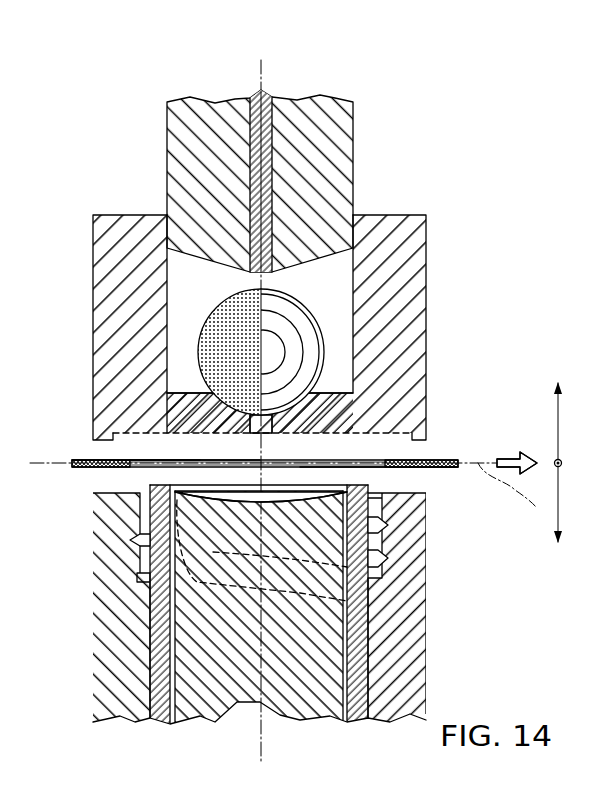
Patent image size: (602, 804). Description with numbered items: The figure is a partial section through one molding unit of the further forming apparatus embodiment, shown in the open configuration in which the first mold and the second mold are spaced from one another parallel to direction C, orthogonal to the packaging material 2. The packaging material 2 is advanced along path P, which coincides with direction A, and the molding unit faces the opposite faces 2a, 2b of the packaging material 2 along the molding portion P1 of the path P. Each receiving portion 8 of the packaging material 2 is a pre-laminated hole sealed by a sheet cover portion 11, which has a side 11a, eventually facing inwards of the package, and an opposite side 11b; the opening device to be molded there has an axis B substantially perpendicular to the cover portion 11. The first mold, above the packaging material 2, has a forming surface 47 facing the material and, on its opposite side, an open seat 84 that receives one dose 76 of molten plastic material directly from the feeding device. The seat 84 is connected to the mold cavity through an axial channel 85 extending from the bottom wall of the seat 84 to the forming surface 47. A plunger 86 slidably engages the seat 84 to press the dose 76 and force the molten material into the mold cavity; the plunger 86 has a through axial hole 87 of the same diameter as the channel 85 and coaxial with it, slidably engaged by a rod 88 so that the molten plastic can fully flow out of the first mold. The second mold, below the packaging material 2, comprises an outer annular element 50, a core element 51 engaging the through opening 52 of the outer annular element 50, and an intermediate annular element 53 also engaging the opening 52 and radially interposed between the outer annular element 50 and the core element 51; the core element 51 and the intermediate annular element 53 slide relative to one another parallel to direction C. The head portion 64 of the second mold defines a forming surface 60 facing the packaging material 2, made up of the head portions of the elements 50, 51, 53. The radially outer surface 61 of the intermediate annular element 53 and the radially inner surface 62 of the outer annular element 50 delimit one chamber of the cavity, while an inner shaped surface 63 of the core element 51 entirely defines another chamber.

The plunger 86 is at (205, 118).
The through axial hole 87 is at (257, 139).
The rod 88 is at (264, 182).
The open seat 84 is at (170, 272).
The dose 76 is at (298, 338).
The forming surface 47 is at (202, 447).
The axial channel 85 is at (253, 430).
The forming surface 60 is at (272, 495).
The receiving portion 8 is at (343, 456).
The packaging material 2 is at (442, 452).
The face of packaging material 2a is at (84, 457).
The face of packaging material 2b is at (447, 472).
The cover portion 11 is at (157, 458).
The side of cover portion 11a is at (132, 457).
The side of cover portion 11b is at (378, 468).
The path P is at (512, 457).
The molding portion P1 is at (517, 463).
The direction A is at (512, 496).
The axis B is at (261, 72).
The direction C is at (558, 425).
The outer annular element 50 is at (402, 603).
The core element 51 is at (317, 667).
The opening 52 is at (152, 632).
The intermediate annular element 53 is at (160, 690).
The radially outer surface 61 is at (375, 540).
The radially inner surface 62 is at (152, 557).
The inner shaped surface 63 is at (232, 562).
The head portion 64 is at (270, 515).